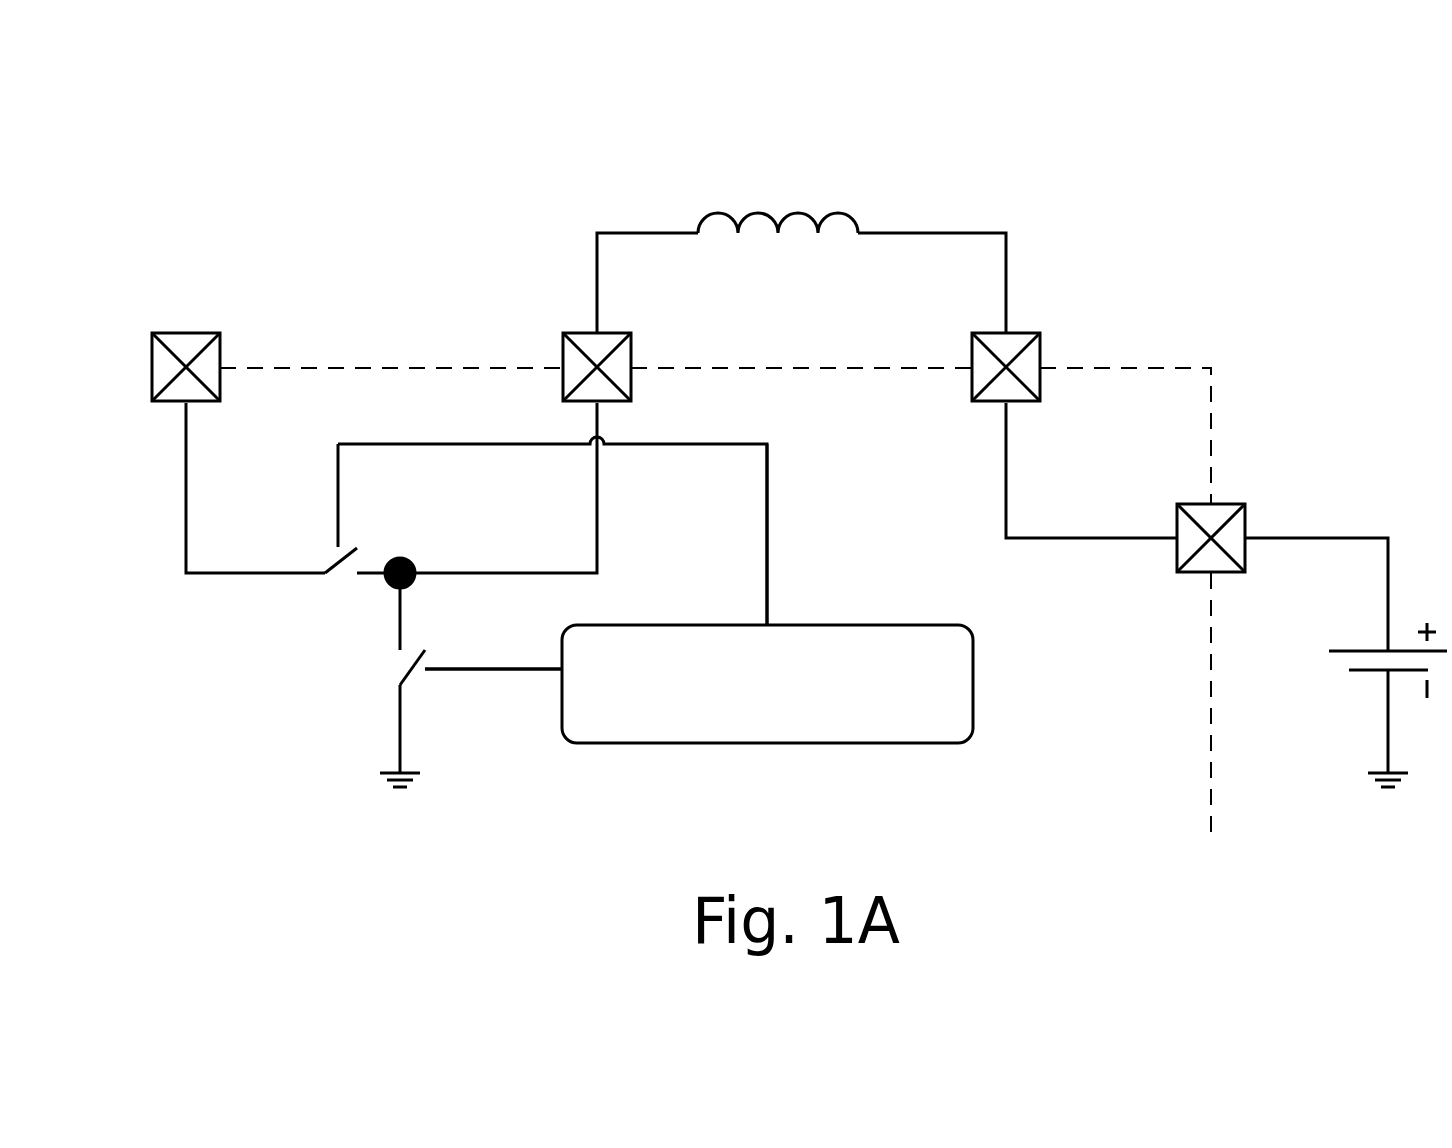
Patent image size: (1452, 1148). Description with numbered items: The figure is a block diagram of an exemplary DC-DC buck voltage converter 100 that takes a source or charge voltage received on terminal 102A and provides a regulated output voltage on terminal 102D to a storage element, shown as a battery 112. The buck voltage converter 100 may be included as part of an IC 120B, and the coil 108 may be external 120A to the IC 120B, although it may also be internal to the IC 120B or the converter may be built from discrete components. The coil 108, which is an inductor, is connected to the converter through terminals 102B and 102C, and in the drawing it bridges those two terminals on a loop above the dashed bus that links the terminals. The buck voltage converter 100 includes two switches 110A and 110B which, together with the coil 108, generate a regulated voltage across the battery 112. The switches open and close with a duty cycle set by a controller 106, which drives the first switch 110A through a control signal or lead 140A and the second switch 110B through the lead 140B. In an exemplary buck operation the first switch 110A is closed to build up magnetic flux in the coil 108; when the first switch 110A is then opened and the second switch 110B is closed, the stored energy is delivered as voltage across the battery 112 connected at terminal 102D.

The DC-DC buck voltage converter 100 is at (277, 122).
The terminal 102A is at (222, 327).
The terminal 102B is at (632, 327).
The terminal 102C is at (968, 328).
The terminal 102D is at (1250, 498).
The controller 106 is at (767, 684).
The coil 108 is at (801, 208).
The first switch 110A is at (337, 580).
The second switch 110B is at (390, 662).
The battery 112 is at (1380, 643).
The external coil region 120A is at (1060, 272).
The IC 120B is at (1038, 780).
The control signal 140A is at (777, 530).
The lead 140B is at (457, 678).